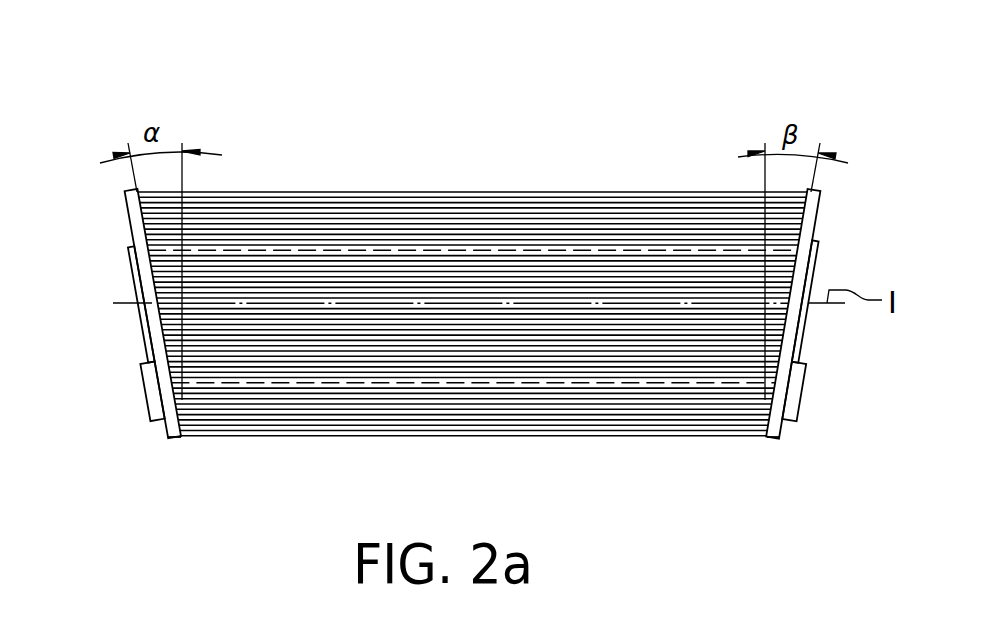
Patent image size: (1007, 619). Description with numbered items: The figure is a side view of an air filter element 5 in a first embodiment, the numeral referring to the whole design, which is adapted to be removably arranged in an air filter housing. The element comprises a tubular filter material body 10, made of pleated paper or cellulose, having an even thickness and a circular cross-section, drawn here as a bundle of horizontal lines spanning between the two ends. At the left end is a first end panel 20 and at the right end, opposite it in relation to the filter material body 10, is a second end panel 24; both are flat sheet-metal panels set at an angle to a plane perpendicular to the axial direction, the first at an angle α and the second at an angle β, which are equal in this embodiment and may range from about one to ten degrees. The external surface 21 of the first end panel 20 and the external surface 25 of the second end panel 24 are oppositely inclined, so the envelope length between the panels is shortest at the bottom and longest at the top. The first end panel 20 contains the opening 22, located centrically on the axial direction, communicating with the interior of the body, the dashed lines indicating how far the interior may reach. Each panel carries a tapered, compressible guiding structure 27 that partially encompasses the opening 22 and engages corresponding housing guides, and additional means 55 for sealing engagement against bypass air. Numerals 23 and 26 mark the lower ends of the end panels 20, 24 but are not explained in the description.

The air filter element 5 is at (668, 90).
The tubular filter material body 10 is at (448, 191).
The first end panel 20 is at (127, 198).
The external surface of the first end panel 21 is at (127, 233).
The opening 22 is at (128, 303).
The lower end of first header plate 23 is at (168, 436).
The second end panel 24 is at (819, 198).
The external surface of the second end panel 25 is at (821, 234).
The lower end of second header plate 26 is at (779, 436).
The guiding structure 27 is at (143, 388).
The additional sealing means 55 is at (136, 316).